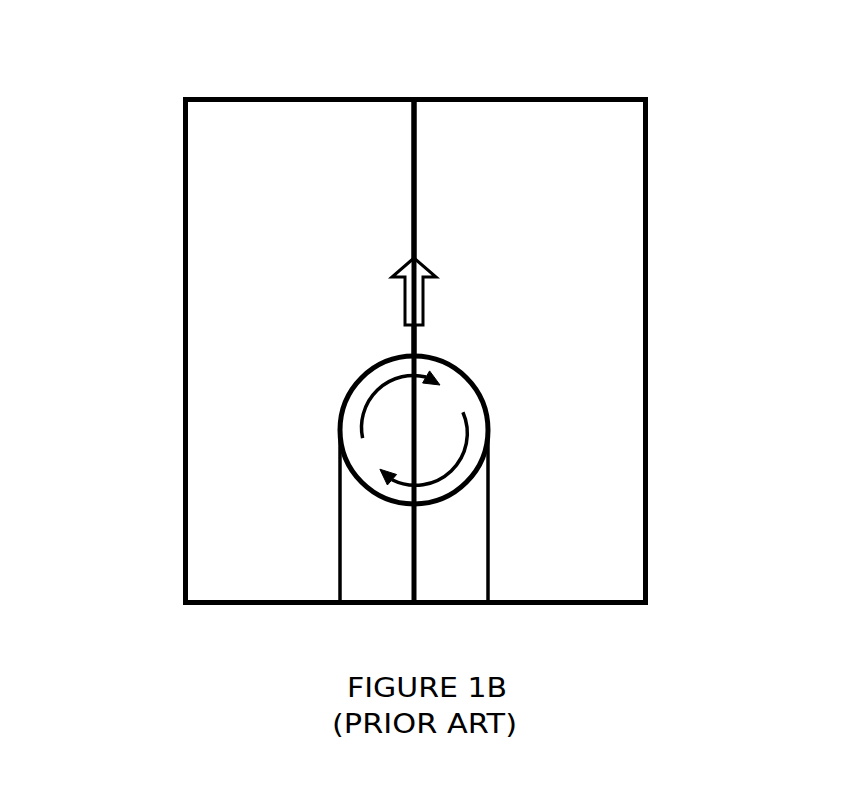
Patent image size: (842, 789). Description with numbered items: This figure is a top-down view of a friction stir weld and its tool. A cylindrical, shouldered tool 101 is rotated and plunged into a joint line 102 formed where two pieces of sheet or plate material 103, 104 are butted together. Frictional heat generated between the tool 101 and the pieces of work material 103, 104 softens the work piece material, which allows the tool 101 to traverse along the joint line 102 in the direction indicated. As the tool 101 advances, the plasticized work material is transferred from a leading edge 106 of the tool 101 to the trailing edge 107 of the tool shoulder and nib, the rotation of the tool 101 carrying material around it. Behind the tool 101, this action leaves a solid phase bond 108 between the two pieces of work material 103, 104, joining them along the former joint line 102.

The shouldered tool 101 is at (362, 372).
The joint line 102 is at (418, 128).
The piece of sheet or plate material 103 is at (210, 172).
The piece of sheet or plate material 104 is at (587, 197).
The leading edge 106 is at (302, 447).
The trailing edge 107 is at (526, 450).
The solid phase bond 108 is at (350, 540).